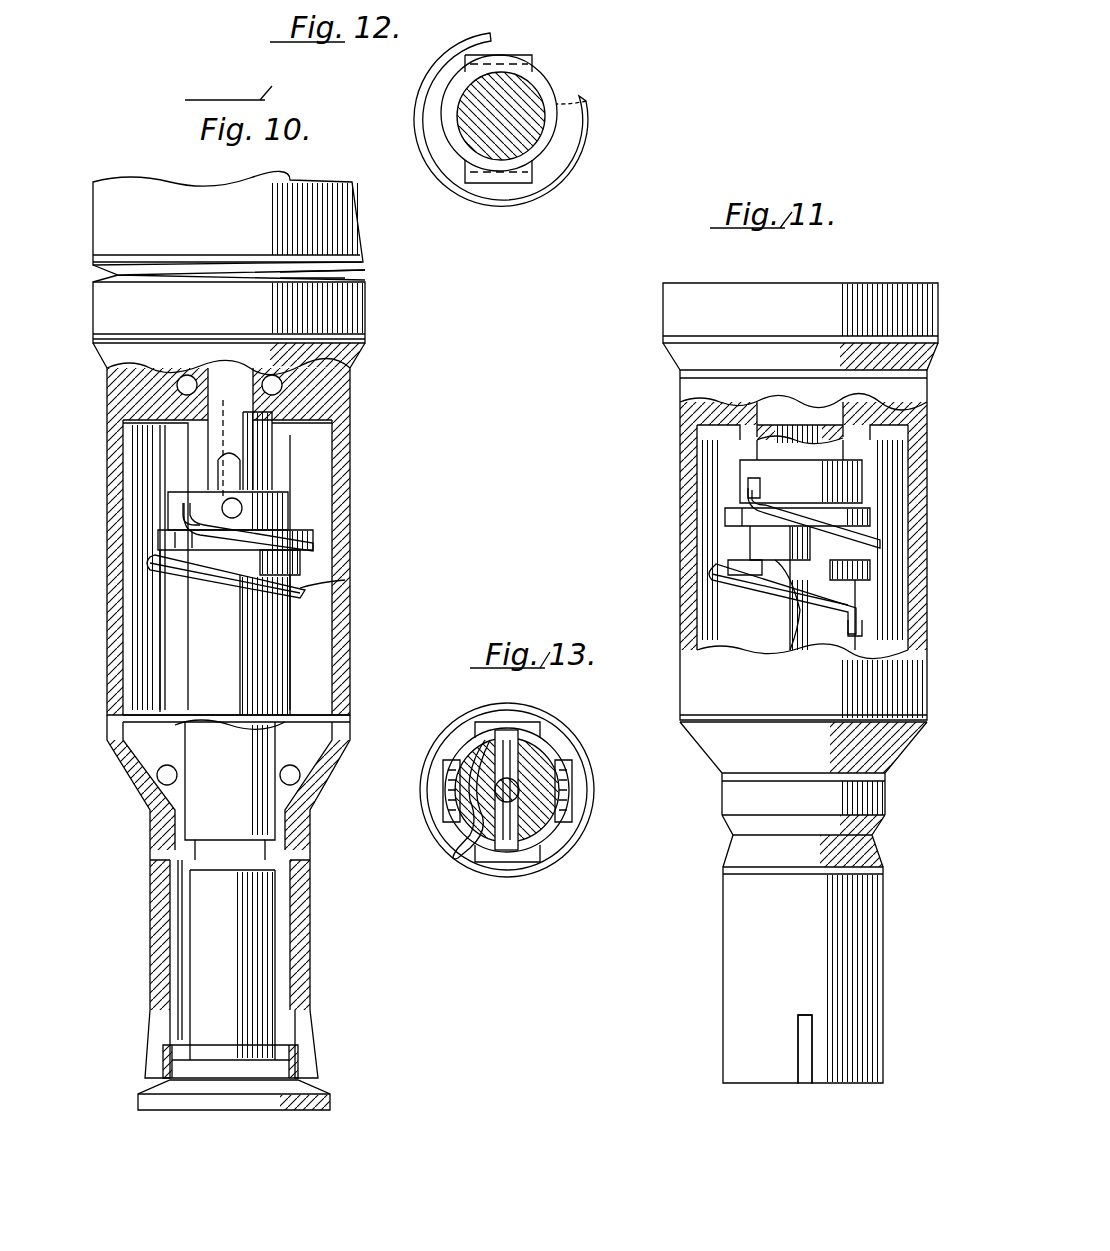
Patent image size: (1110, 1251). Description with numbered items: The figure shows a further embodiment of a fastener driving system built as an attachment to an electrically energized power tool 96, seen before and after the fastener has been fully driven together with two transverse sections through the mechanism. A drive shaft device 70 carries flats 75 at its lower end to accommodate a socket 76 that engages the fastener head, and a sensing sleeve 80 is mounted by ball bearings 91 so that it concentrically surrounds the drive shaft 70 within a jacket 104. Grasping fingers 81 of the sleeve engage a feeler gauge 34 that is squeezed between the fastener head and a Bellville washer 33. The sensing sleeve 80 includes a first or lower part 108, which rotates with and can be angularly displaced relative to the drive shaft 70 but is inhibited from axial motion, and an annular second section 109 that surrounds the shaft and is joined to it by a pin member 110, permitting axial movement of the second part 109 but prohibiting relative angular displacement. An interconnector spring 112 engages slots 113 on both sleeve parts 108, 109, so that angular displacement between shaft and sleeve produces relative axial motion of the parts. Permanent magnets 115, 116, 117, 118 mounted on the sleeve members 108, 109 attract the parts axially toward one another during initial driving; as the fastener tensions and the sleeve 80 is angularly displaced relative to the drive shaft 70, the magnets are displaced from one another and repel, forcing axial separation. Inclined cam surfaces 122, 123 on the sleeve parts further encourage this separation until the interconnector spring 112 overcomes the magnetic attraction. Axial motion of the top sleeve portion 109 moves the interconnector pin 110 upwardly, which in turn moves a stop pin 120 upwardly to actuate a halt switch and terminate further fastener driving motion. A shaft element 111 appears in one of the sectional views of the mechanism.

In FIG. 10, the power tool 96 is at (123, 188).
In FIG. 10, the stop pin 120 is at (232, 375).
In FIG. 13, the stop pin 120 is at (520, 788).
In FIG. 10, the ball bearings 91 is at (355, 368).
In FIG. 10, the drive shaft device 70 is at (268, 415).
In FIG. 13, the drive shaft device 70 is at (540, 800).
In FIG. 10, the pin member 110 is at (239, 503).
In FIG. 10, the slots 113 is at (190, 500).
In FIG. 11, the slots 113 is at (750, 478).
In FIG. 10, the second section 109 is at (205, 492).
In FIG. 13, the second section 109 is at (468, 848).
In FIG. 11, the second section 109 is at (862, 490).
In FIG. 10, the permanent magnet 117 is at (313, 520).
In FIG. 12, the permanent magnet 117 is at (515, 180).
In FIG. 13, the permanent magnet 117 is at (525, 850).
In FIG. 11, the permanent magnet 117 is at (882, 518).
In FIG. 10, the jacket 104 is at (352, 547).
In FIG. 11, the jacket 104 is at (688, 600).
In FIG. 10, the permanent magnet 115 is at (150, 562).
In FIG. 12, the permanent magnet 115 is at (520, 58).
In FIG. 13, the permanent magnet 115 is at (488, 730).
In FIG. 11, the permanent magnet 115 is at (735, 518).
In FIG. 10, the permanent magnet 118 is at (305, 580).
In FIG. 13, the permanent magnet 118 is at (450, 780).
In FIG. 11, the permanent magnet 118 is at (872, 568).
In FIG. 10, the interconnector spring 112 is at (312, 592).
In FIG. 12, the interconnector spring 112 is at (585, 117).
In FIG. 13, the interconnector spring 112 is at (575, 850).
In FIG. 11, the interconnector spring 112 is at (775, 684).
In FIG. 10, the permanent magnet 116 is at (178, 572).
In FIG. 13, the permanent magnet 116 is at (575, 790).
In FIG. 11, the permanent magnet 116 is at (725, 572).
In FIG. 10, the first or lower part 108 is at (292, 638).
In FIG. 11, the first or lower part 108 is at (745, 628).
In FIG. 10, the flats 75 is at (260, 852).
In FIG. 10, the sensing sleeve 80 is at (332, 910).
In FIG. 11, the sensing sleeve 80 is at (745, 945).
In FIG. 10, the socket 76 is at (258, 972).
In FIG. 10, the grasping fingers 81 is at (306, 1028).
In FIG. 11, the grasping fingers 81 is at (740, 1057).
In FIG. 10, the feeler gauge 34 is at (300, 1062).
In FIG. 10, the Bellville washer 33 is at (347, 1104).
In FIG. 12, the shaft 111 is at (550, 84).
In FIG. 11, the inclined cam surface 122 is at (780, 540).
In FIG. 11, the inclined cam surface 123 is at (801, 605).